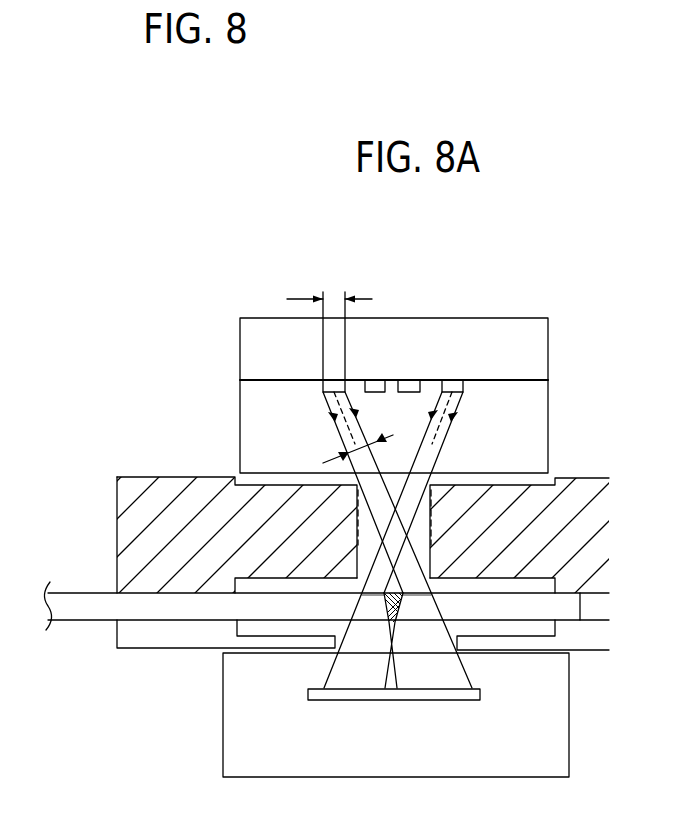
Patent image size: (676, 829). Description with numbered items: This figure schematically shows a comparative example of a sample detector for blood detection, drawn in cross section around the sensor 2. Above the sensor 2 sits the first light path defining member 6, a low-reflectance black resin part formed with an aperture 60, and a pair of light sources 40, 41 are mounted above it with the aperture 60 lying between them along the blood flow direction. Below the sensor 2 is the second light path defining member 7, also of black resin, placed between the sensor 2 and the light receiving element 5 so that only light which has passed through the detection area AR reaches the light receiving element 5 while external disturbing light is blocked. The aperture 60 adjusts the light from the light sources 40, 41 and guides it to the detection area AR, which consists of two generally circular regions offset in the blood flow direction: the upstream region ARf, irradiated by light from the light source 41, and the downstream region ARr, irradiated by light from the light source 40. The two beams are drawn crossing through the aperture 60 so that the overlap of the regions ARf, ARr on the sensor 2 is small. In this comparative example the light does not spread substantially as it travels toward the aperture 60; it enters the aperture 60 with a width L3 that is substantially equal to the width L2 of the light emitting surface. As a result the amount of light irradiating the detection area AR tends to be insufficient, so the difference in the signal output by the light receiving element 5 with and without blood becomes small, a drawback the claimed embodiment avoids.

The sensor 2 is at (80, 602).
The light receiving element 5 is at (437, 695).
The first light path defining member 6 is at (588, 500).
The second light path defining member 7 is at (588, 645).
The light source 40 is at (333, 383).
The light source 41 is at (452, 382).
The aperture 60 is at (430, 470).
The width of the light emitting surface L2 is at (326, 323).
The width of light entering the aperture L3 is at (345, 446).
The detection area AR is at (393, 586).
The upstream region ARf is at (363, 610).
The downstream region ARr is at (420, 610).